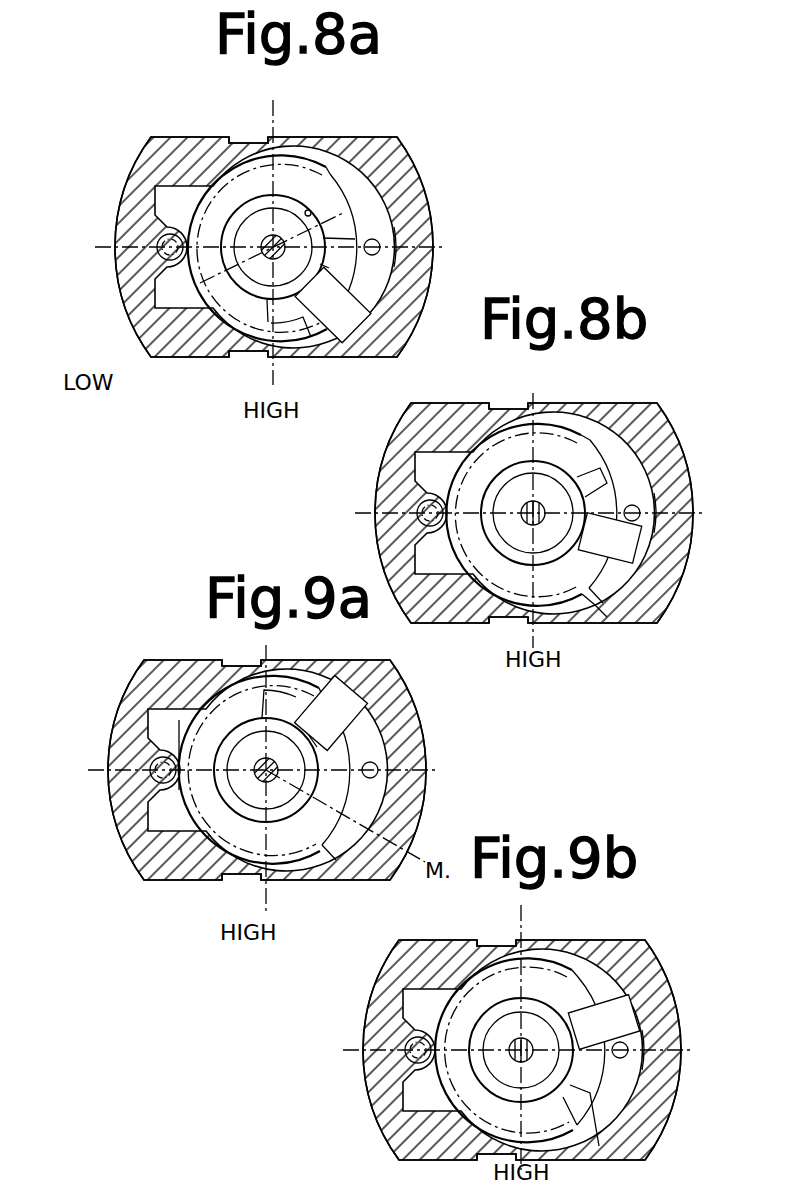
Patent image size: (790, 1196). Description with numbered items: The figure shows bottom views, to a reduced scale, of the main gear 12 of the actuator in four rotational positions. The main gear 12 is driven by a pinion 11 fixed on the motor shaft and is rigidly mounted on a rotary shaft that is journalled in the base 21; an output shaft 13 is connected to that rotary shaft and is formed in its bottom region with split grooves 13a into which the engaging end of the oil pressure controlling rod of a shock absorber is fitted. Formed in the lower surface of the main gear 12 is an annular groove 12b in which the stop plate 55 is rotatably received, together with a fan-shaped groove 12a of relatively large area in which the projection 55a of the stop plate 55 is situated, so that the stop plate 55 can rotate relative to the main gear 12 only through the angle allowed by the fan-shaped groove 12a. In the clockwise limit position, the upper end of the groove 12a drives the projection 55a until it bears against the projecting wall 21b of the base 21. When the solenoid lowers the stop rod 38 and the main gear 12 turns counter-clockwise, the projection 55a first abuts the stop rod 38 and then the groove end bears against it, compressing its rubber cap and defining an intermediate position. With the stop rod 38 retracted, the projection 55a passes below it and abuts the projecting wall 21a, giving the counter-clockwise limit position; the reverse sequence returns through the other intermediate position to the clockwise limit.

In FIG. 8A, the pinion 11 is at (251, 247).
In FIG. 8B, the pinion 11 is at (519, 513).
In FIG. 9A, the pinion 11 is at (248, 770).
In FIG. 9B, the pinion 11 is at (522, 1050).
In FIG. 8A, the main gear 12 is at (217, 248).
In FIG. 8B, the main gear 12 is at (531, 484).
In FIG. 9A, the main gear 12 is at (317, 770).
In FIG. 9B, the main gear 12 is at (520, 1018).
In FIG. 8A, the fan-shaped groove 12a is at (311, 353).
In FIG. 8B, the fan-shaped groove 12a is at (603, 621).
In FIG. 9A, the fan-shaped groove 12a is at (319, 676).
In FIG. 9B, the fan-shaped groove 12a is at (641, 1117).
In FIG. 8A, the annular groove 12b is at (355, 159).
In FIG. 8A, the output shaft 13 is at (257, 194).
In FIG. 8B, the output shaft 13 is at (502, 457).
In FIG. 9A, the output shaft 13 is at (271, 826).
In FIG. 9B, the output shaft 13 is at (500, 991).
In FIG. 9A, the split grooves 13a is at (120, 755).
In FIG. 8A, the base 21 is at (263, 249).
In FIG. 8B, the base 21 is at (518, 513).
In FIG. 9A, the base 21 is at (259, 773).
In FIG. 9B, the base 21 is at (498, 1050).
In FIG. 9A, the projecting wall 21a is at (389, 669).
In FIG. 8A, the projecting wall 21b is at (375, 356).
In FIG. 9A, the projecting wall 21b is at (373, 877).
In FIG. 8A, the stop rod 38 is at (432, 234).
In FIG. 8B, the stop rod 38 is at (693, 509).
In FIG. 9B, the stop rod 38 is at (681, 1062).
In FIG. 8A, the stop plate 55 is at (417, 266).
In FIG. 8B, the stop plate 55 is at (632, 513).
In FIG. 9A, the stop plate 55 is at (415, 781).
In FIG. 9B, the stop plate 55 is at (620, 1050).
In FIG. 8A, the projection 55a is at (381, 309).
In FIG. 8B, the projection 55a is at (616, 461).
In FIG. 9A, the projection 55a is at (388, 712).
In FIG. 9B, the projection 55a is at (604, 972).